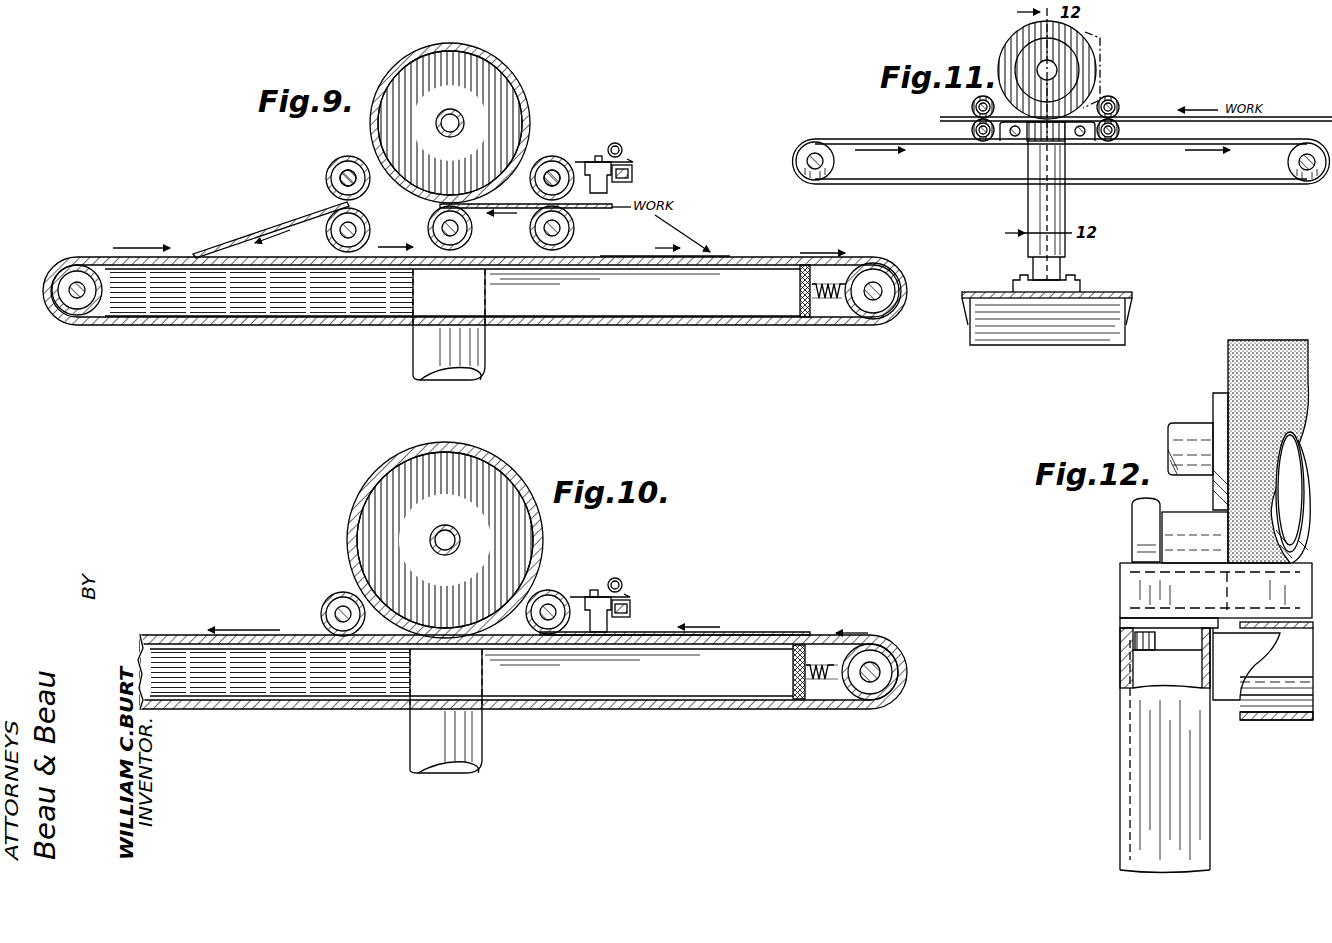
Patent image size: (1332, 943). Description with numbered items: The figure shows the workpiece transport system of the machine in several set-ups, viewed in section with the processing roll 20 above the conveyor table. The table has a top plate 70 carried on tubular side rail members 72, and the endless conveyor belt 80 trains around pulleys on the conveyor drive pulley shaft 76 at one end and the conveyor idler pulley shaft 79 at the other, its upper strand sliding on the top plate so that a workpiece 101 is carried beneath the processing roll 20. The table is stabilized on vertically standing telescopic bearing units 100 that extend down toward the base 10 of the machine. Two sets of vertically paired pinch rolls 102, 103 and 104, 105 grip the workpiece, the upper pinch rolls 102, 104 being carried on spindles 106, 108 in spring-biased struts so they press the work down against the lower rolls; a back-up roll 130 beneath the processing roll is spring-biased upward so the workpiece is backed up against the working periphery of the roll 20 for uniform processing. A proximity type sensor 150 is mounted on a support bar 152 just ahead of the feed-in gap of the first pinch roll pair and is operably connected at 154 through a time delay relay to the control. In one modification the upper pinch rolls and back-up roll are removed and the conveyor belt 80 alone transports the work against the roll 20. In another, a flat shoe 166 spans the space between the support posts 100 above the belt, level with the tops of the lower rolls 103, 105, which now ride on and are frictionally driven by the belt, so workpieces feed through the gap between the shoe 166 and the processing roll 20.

In FIG. 11, the base 10 is at (1105, 292).
In FIG. 9, the processing roll 20 is at (528, 96).
In FIG. 10, the processing roll 20 is at (505, 462).
In FIG. 11, the processing roll 20 is at (1012, 38).
In FIG. 12, the processing roll 20 is at (1250, 342).
In FIG. 9, the top plate 70 is at (778, 260).
In FIG. 10, the top plate 70 is at (770, 638).
In FIG. 10, the tubular side rail member 72 is at (762, 697).
In FIG. 9, the conveyor drive pulley shaft 76 is at (77, 290).
In FIG. 11, the conveyor drive pulley shaft 76 is at (815, 150).
In FIG. 9, the conveyor idler pulley shaft 79 is at (873, 291).
In FIG. 10, the conveyor idler pulley shaft 79 is at (880, 680).
In FIG. 11, the conveyor idler pulley shaft 79 is at (1307, 178).
In FIG. 9, the conveyor belt 80 is at (182, 257).
In FIG. 10, the conveyor belt 80 is at (185, 635).
In FIG. 11, the conveyor belt 80 is at (947, 185).
In FIG. 12, the conveyor belt 80 is at (1282, 720).
In FIG. 9, the telescopic bearing unit 100 is at (449, 324).
In FIG. 10, the telescopic bearing unit 100 is at (482, 749).
In FIG. 11, the telescopic bearing unit 100 is at (1065, 200).
In FIG. 12, the telescopic bearing unit 100 is at (1120, 763).
In FIG. 9, the workpiece 101 is at (262, 230).
In FIG. 10, the workpiece 101 is at (650, 633).
In FIG. 11, the workpiece 101 is at (1130, 117).
In FIG. 9, the upper pinch roll 102 is at (549, 157).
In FIG. 11, the upper pinch roll 102 is at (1112, 96).
In FIG. 9, the lower pinch roll 103 is at (575, 240).
In FIG. 10, the lower pinch roll 103 is at (552, 590).
In FIG. 11, the lower pinch roll 103 is at (1120, 133).
In FIG. 9, the upper pinch roll 104 is at (348, 156).
In FIG. 11, the upper pinch roll 104 is at (972, 107).
In FIG. 12, the upper pinch roll 104 is at (1198, 520).
In FIG. 9, the lower pinch roll 105 is at (371, 222).
In FIG. 10, the lower pinch roll 105 is at (331, 592).
In FIG. 11, the lower pinch roll 105 is at (972, 131).
In FIG. 9, the spindle 106 is at (340, 171).
In FIG. 9, the spindle 108 is at (554, 172).
In FIG. 9, the back-up roll 130 is at (473, 238).
In FIG. 9, the proximity type sensor 150 is at (626, 153).
In FIG. 10, the proximity type sensor 150 is at (636, 599).
In FIG. 9, the support bar 152 is at (633, 178).
In FIG. 9, the operable connection 154 is at (612, 143).
In FIG. 11, the flat shoe 166 is at (1085, 140).
In FIG. 12, the flat shoe 166 is at (1115, 590).